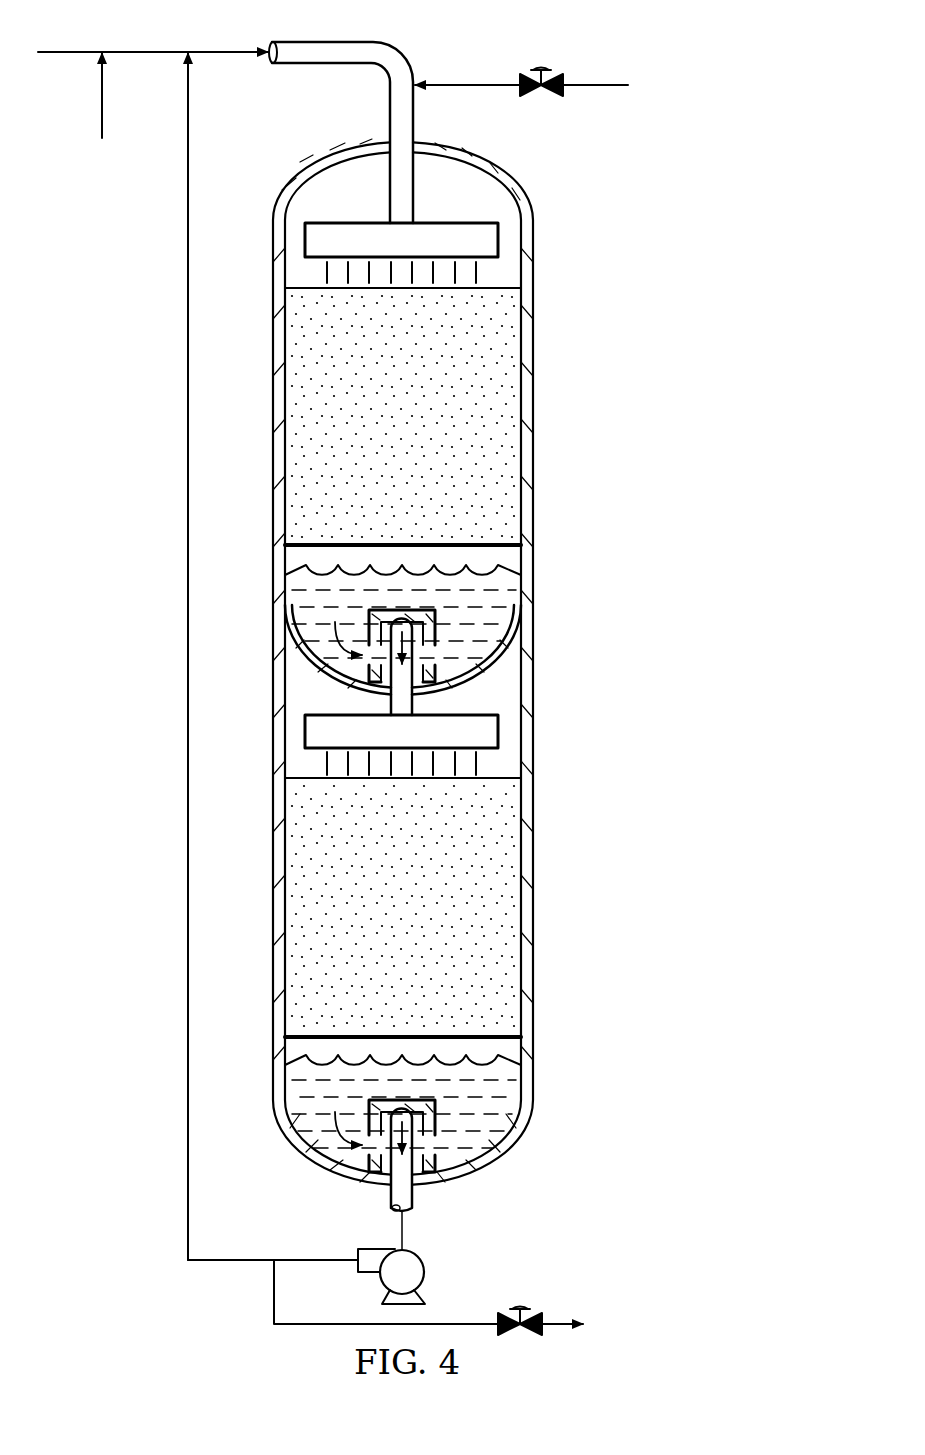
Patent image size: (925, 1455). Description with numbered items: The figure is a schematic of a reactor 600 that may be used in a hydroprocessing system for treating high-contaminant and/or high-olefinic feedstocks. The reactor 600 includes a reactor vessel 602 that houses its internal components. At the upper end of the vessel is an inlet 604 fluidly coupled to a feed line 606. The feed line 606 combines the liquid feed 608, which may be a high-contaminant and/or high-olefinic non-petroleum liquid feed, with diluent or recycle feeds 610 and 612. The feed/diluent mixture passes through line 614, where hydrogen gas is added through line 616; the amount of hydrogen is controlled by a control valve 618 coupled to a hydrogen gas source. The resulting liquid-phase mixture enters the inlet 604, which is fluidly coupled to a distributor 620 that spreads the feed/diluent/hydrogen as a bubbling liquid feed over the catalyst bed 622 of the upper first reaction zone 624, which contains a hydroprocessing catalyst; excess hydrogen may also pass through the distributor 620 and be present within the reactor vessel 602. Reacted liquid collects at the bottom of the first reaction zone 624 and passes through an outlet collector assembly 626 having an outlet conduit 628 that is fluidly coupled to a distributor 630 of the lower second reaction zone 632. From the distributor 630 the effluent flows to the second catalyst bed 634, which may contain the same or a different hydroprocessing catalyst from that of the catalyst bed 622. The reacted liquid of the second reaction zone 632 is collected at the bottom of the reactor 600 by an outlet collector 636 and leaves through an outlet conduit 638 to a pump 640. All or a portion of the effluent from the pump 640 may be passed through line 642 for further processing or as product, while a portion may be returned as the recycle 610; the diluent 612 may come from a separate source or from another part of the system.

The reactor 600 is at (583, 190).
The reactor vessel 602 is at (535, 262).
The inlet 604 is at (430, 150).
The feed line 606 is at (390, 97).
The liquid feed 608 is at (155, 50).
The recycle feed 610 is at (186, 117).
The diluent 612 is at (100, 117).
The line 614 is at (291, 66).
The line 616 is at (486, 83).
The control valve 618 is at (548, 75).
The distributor 620 is at (378, 222).
The catalyst bed 622 is at (385, 426).
The upper first reaction zone 624 is at (290, 617).
The outlet collector assembly 626 is at (435, 633).
The outlet conduit 628 is at (435, 660).
The distributor 630 is at (498, 732).
The lower second reaction zone 632 is at (290, 740).
The second catalyst bed 634 is at (385, 921).
The outlet collector 636 is at (435, 1140).
The outlet conduit 638 is at (420, 1165).
The pump 640 is at (425, 1272).
The line 642 is at (274, 1292).